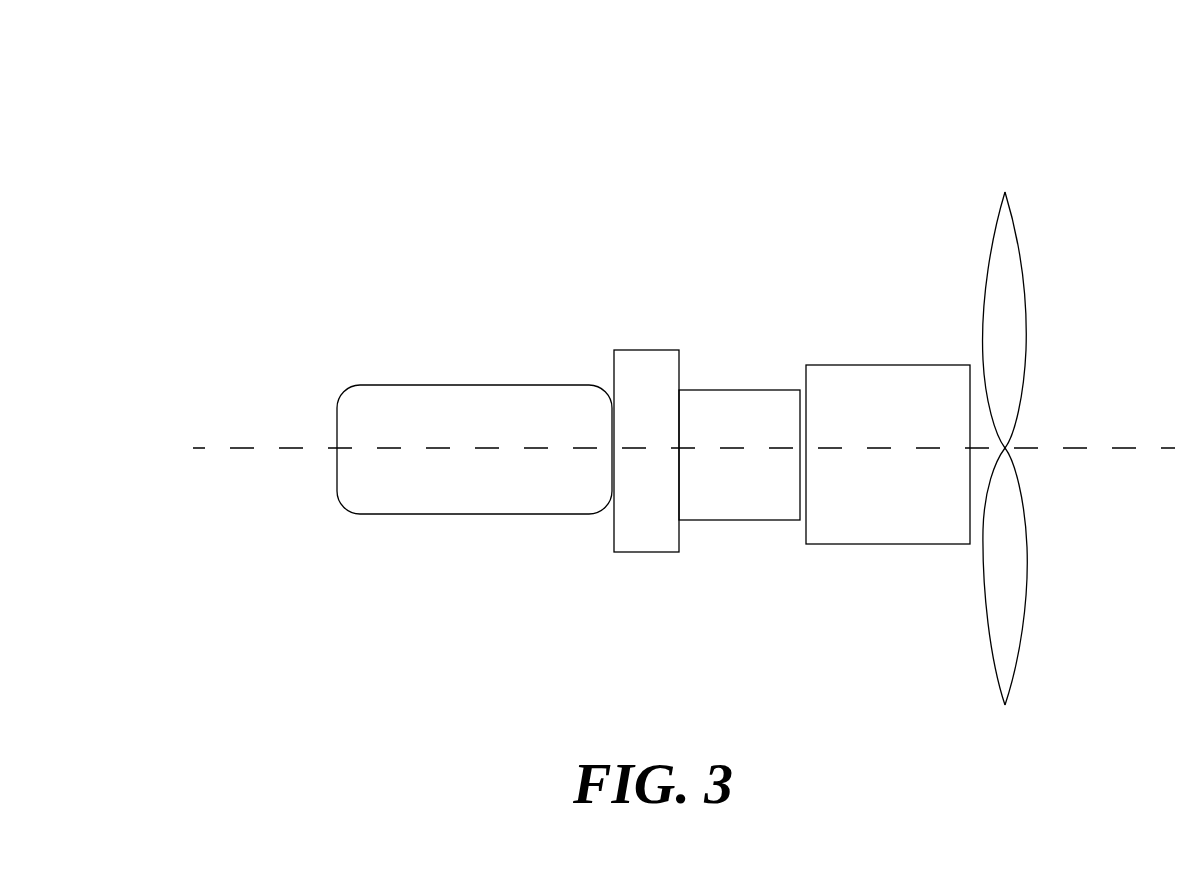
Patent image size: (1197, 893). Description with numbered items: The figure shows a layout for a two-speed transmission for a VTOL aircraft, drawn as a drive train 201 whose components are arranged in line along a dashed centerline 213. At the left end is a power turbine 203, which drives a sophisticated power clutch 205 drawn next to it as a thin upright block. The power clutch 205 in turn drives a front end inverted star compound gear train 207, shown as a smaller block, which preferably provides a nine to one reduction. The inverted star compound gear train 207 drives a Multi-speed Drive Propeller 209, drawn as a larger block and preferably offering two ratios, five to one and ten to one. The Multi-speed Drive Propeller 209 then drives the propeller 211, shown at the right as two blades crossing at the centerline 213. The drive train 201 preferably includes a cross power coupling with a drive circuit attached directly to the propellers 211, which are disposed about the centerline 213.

The drive train 201 is at (195, 88).
The power turbine 203 is at (430, 385).
The power clutch 205 is at (647, 350).
The inverted star compound gear train 207 is at (780, 390).
The Multi-speed Drive Propeller (MDP) 209 is at (888, 365).
The propeller 211 is at (1023, 296).
The centerline 213 is at (1127, 449).